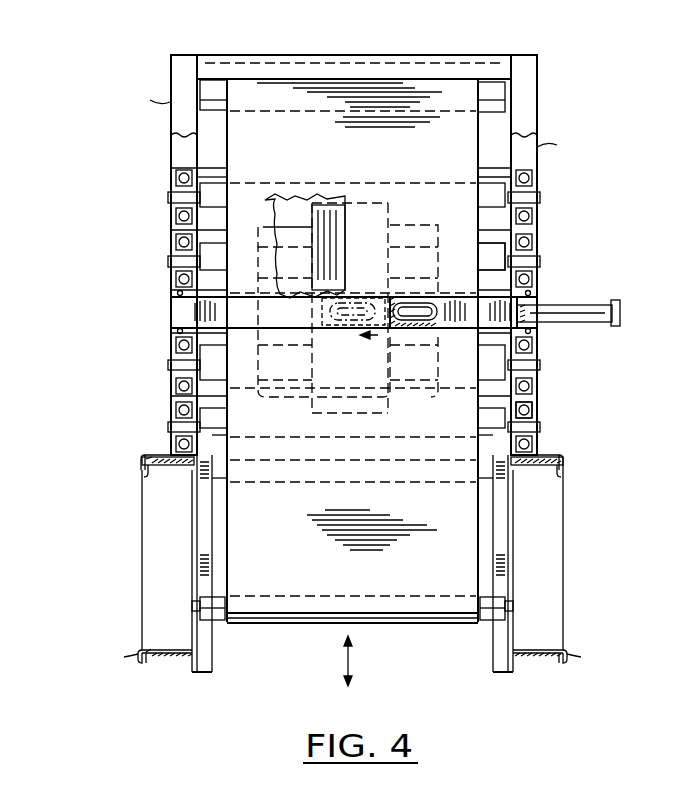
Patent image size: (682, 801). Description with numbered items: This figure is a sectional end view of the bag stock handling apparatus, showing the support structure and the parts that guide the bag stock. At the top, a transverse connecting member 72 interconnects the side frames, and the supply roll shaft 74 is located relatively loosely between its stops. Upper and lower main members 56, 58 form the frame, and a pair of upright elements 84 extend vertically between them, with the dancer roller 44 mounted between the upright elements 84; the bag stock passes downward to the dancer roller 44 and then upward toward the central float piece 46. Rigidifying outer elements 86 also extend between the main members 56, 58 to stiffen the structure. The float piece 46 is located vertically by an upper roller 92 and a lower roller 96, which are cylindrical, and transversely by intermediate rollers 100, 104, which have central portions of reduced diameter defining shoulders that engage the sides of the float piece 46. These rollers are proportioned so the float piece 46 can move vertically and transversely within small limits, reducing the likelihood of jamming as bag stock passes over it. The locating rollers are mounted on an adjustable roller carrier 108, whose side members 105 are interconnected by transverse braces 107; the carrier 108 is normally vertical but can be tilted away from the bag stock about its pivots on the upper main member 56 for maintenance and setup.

The dancer roller 44 is at (485, 608).
The float piece 46 is at (300, 405).
The upper main member 56 is at (165, 463).
The lower main member 58 is at (150, 656).
The transverse connecting member 72 is at (414, 72).
The shaft 74 is at (185, 103).
The upright element 84 is at (197, 543).
The rigidifying outer element 86 is at (205, 507).
The upper roller 92 is at (538, 196).
The lower roller 96 is at (505, 416).
The intermediate roller 100 is at (495, 256).
The intermediate roller 104 is at (536, 360).
The side member 105 is at (175, 188).
The transverse brace 107 is at (490, 185).
The roller carrier 108 is at (130, 159).